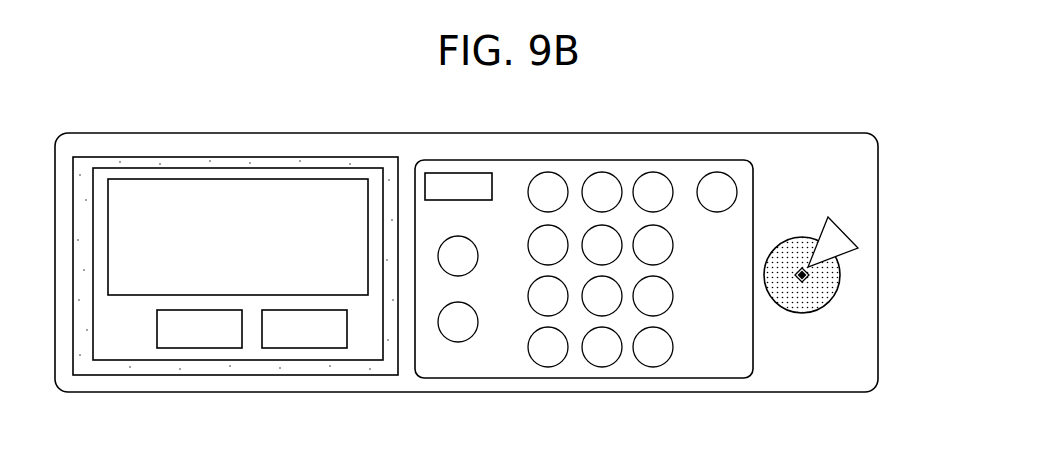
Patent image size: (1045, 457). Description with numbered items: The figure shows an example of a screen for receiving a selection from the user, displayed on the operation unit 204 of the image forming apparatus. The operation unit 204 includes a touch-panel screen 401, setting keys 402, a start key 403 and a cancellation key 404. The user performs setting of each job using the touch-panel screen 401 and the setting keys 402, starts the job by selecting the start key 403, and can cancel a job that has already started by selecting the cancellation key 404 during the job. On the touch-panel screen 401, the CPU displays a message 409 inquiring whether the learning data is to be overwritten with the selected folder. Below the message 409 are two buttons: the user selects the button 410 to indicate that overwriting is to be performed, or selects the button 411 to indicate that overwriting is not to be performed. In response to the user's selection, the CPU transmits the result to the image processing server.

The operation unit 204 is at (147, 133).
The touch-panel screen 401 is at (223, 157).
The setting keys 402 is at (585, 160).
The start key 403 is at (840, 295).
The cancellation key 404 is at (858, 240).
The message 409 is at (108, 215).
The button 410 is at (188, 349).
The button 411 is at (313, 349).